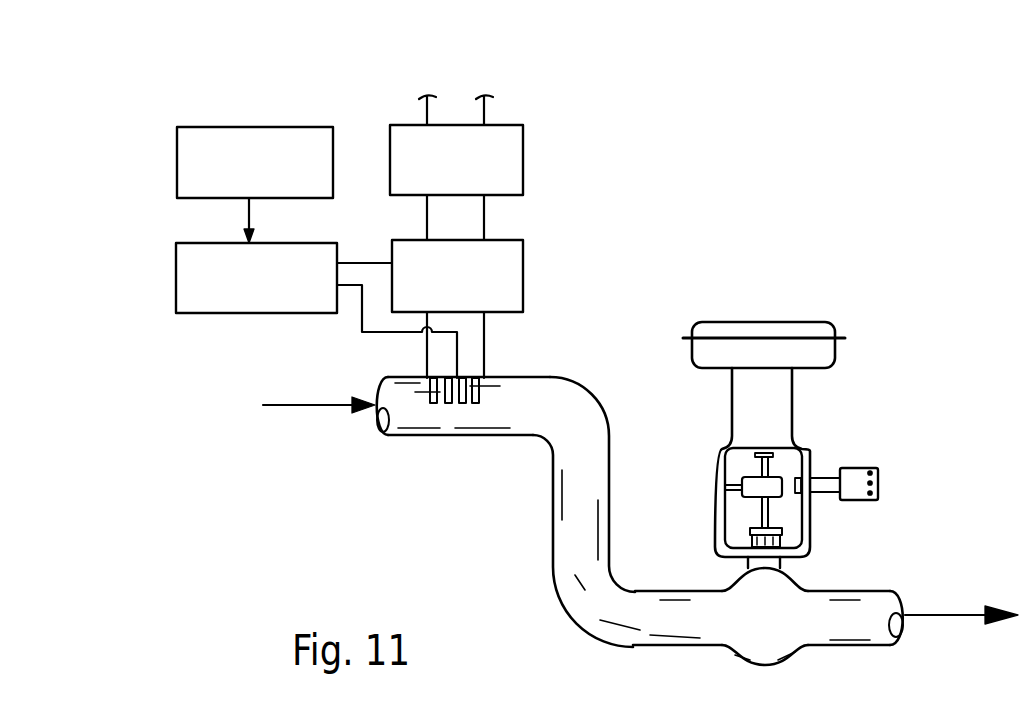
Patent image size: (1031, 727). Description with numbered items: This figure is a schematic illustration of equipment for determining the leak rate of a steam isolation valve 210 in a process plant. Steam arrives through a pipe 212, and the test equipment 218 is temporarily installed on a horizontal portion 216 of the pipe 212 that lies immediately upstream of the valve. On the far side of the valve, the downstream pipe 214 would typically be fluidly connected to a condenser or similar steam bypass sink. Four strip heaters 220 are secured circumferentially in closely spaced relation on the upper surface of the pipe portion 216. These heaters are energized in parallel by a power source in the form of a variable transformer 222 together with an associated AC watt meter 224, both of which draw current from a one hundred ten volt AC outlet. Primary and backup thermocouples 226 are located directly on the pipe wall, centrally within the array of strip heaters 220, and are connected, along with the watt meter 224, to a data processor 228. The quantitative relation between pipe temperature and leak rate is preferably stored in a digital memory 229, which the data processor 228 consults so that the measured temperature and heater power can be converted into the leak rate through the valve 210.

The steam isolation valve 210 is at (792, 418).
The pipe 212 is at (610, 432).
The downstream pipe 214 is at (860, 590).
The horizontal portion of pipe 216 is at (432, 437).
The test equipment 218 is at (668, 208).
The strip heaters 220 is at (480, 402).
The variable transformer 222 is at (523, 143).
The AC watt meter 224 is at (523, 280).
The thermocouples 226 is at (458, 378).
The data processor 228 is at (176, 278).
The digital memory 229 is at (177, 165).